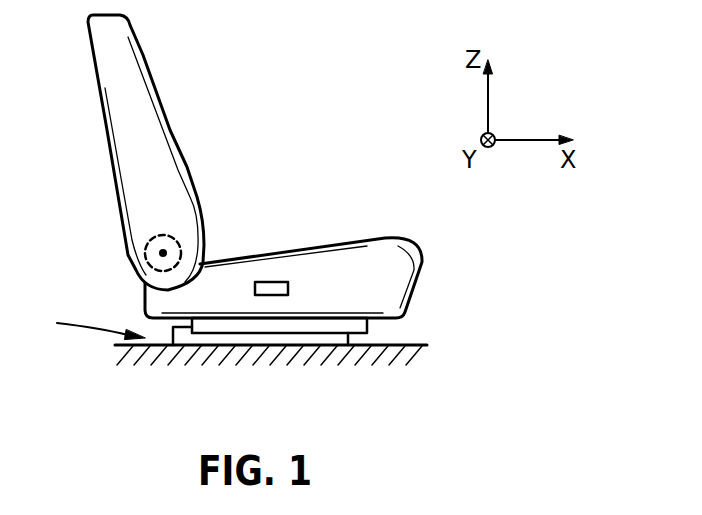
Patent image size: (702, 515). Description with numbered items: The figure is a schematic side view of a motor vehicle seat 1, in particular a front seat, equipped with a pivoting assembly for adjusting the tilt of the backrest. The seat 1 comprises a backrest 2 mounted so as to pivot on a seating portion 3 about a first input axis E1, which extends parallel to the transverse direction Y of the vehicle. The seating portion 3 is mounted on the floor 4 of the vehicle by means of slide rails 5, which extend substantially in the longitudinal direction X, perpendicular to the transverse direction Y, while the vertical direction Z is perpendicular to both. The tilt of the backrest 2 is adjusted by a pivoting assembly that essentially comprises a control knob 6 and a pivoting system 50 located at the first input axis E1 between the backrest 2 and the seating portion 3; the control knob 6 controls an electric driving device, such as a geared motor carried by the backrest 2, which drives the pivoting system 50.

The motor vehicle seat 1 is at (308, 83).
The backrest 2 is at (143, 112).
The seating portion 3 is at (368, 258).
The floor 4 is at (412, 343).
The slide rails 5 is at (92, 323).
The control knob 6 is at (274, 290).
The pivoting system 50 is at (142, 264).
The first input axis E1 is at (160, 252).